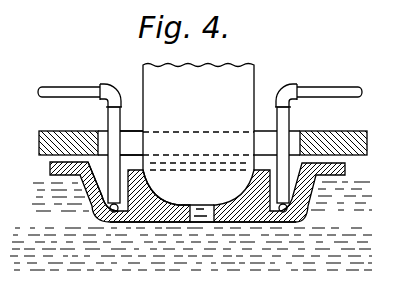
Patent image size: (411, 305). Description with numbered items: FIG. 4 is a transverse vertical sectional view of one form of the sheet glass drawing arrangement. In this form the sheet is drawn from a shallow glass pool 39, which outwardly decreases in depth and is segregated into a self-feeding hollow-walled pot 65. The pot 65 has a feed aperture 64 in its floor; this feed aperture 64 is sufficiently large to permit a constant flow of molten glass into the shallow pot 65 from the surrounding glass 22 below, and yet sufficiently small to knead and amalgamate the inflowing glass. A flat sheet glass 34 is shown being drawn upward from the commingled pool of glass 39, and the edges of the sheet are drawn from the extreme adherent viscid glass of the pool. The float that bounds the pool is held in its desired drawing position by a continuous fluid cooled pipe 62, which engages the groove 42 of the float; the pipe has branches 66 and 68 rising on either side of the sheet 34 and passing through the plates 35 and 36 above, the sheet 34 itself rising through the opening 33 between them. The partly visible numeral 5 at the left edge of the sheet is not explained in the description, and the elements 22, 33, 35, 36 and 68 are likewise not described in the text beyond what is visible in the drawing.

The partial numeral at sheet edge 5 is at (4, 154).
The liquid / water bath 22 is at (342, 237).
The opening in support plate 33 is at (130, 137).
The flat sheet glass 34 is at (250, 67).
The support plate (left) 35 is at (47, 130).
The support plate (right) 36 is at (346, 160).
The shallow glass pool 39 is at (178, 195).
The groove of the float 42 is at (100, 189).
The fluid cooled pipe 62 is at (95, 205).
The feed aperture 64 is at (204, 207).
The self-feeding hollow-walled pot 65 is at (298, 222).
The branches of the fluid cooled pipe 66 is at (57, 86).
The right feed pipe 68 is at (338, 88).